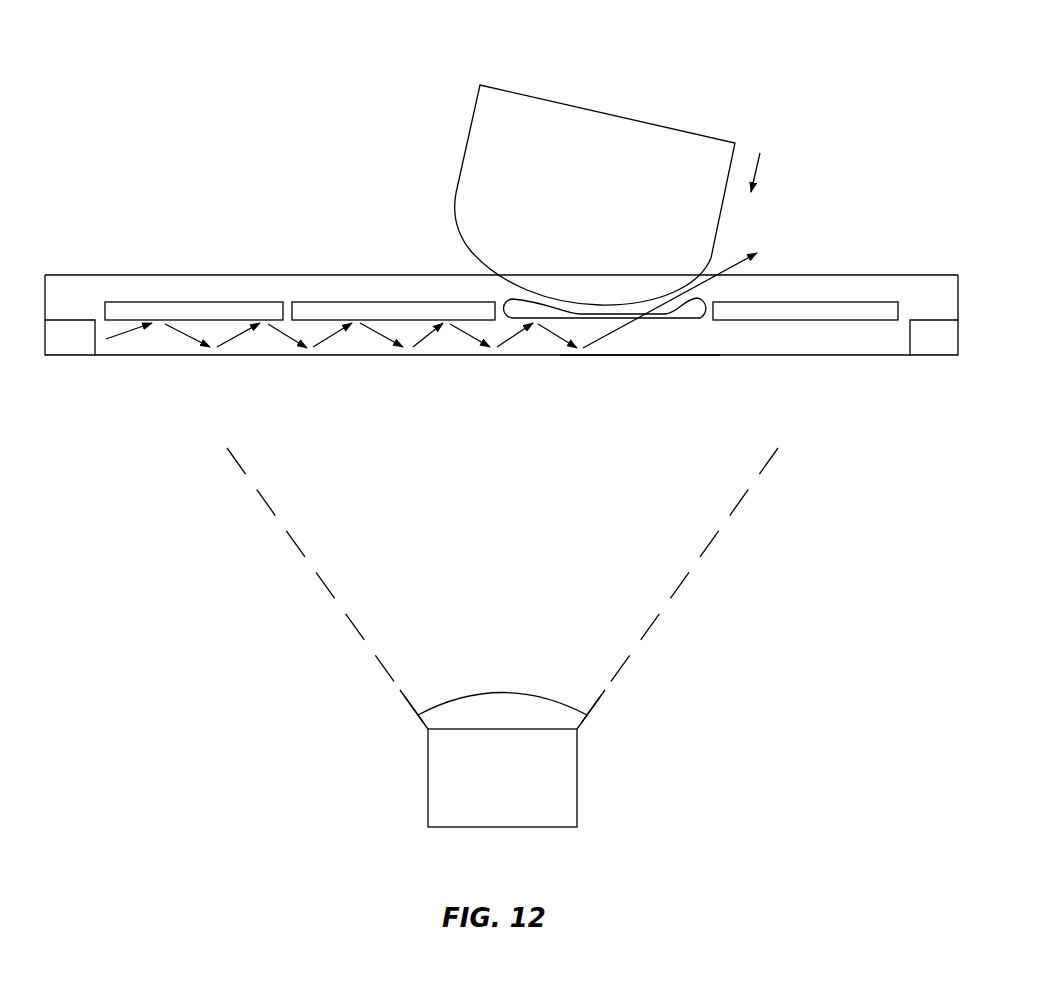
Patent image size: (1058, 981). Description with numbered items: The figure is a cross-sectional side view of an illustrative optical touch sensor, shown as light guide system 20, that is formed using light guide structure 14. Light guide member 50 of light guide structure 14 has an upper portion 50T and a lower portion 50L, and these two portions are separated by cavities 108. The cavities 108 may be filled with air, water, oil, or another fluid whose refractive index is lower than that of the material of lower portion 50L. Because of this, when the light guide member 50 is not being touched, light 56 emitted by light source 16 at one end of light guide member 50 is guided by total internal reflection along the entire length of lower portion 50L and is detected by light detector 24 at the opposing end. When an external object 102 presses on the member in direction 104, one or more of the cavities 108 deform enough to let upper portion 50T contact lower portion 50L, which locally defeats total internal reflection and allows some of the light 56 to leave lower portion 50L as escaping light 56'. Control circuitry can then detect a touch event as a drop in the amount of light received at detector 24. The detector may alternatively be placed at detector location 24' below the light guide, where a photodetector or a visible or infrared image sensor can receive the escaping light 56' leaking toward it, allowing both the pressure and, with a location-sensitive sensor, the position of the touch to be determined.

The light guide system 20 is at (871, 70).
The light guide structure 14 is at (331, 260).
The external object 102 is at (480, 150).
The direction 104 is at (762, 168).
The light 56 is at (341, 366).
The escaping light 56' is at (683, 275).
The cavities 108 is at (352, 312).
The light guide member 50 is at (785, 356).
The upper portion 50T is at (840, 283).
The lower portion 50L is at (637, 328).
The light source 16 is at (70, 340).
The light detector 24 is at (934, 365).
The detector location 24' is at (535, 760).